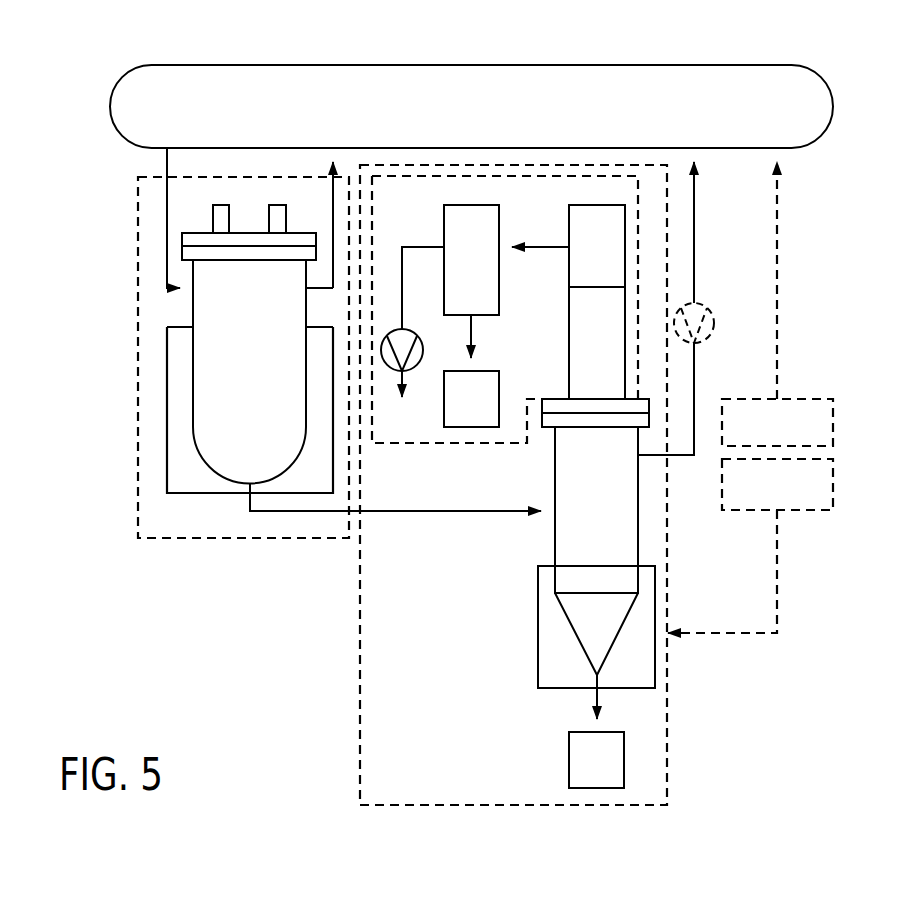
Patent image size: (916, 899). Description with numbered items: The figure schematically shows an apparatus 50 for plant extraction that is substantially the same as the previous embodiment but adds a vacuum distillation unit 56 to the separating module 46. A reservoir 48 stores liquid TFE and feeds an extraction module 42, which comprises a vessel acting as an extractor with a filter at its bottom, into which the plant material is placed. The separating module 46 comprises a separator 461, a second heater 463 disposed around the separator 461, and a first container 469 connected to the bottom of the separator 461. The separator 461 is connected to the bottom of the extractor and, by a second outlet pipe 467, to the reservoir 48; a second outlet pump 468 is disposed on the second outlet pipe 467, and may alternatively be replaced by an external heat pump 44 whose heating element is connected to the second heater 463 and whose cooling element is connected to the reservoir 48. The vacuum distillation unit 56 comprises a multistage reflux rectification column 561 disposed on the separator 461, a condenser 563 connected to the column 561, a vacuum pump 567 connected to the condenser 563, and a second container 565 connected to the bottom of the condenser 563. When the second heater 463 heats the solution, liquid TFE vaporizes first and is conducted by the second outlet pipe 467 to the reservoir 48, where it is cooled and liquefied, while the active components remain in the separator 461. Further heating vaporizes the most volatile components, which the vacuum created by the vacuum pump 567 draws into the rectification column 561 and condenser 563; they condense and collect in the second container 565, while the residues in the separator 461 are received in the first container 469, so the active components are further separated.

The apparatus 50 is at (68, 49).
The reservoir 48 is at (773, 65).
The extraction module 42 is at (138, 373).
The separating module 46 is at (360, 701).
The vacuum distillation unit 56 is at (392, 443).
The multistage reflux rectification column 561 is at (569, 228).
The condenser 563 is at (444, 228).
The second container 565 is at (485, 427).
The vacuum pump 567 is at (410, 373).
The separator 461 is at (638, 530).
The second heater 463 is at (538, 645).
The first container 469 is at (624, 760).
The second outlet pipe 467 is at (694, 241).
The second outlet pump 468 is at (700, 305).
The heat pump 44 is at (833, 430).